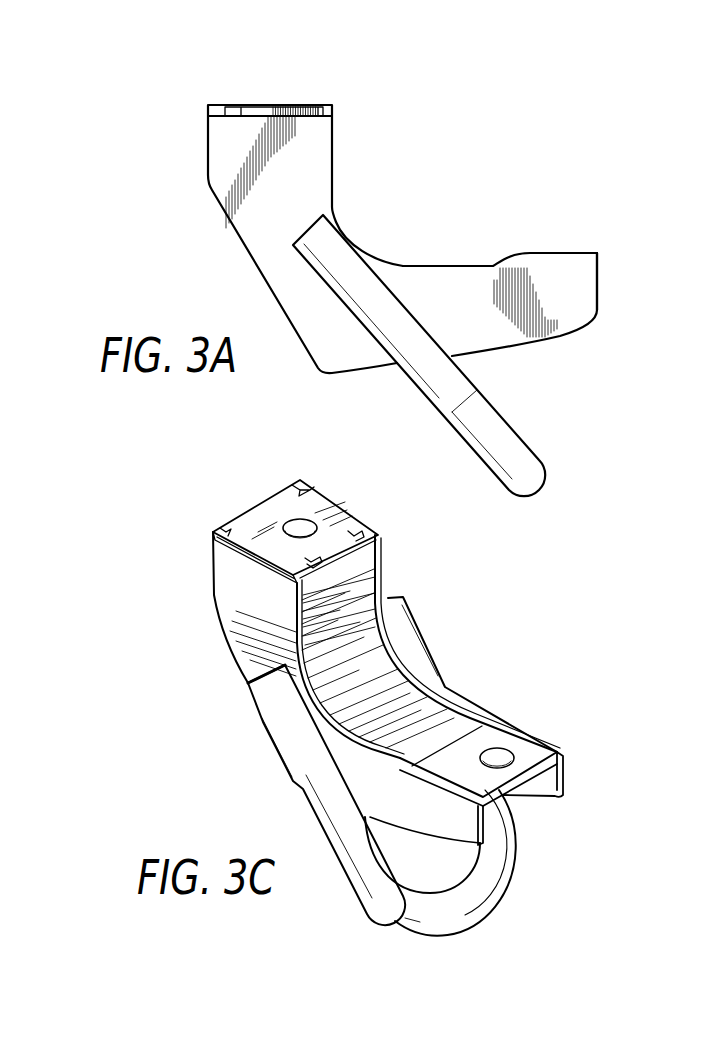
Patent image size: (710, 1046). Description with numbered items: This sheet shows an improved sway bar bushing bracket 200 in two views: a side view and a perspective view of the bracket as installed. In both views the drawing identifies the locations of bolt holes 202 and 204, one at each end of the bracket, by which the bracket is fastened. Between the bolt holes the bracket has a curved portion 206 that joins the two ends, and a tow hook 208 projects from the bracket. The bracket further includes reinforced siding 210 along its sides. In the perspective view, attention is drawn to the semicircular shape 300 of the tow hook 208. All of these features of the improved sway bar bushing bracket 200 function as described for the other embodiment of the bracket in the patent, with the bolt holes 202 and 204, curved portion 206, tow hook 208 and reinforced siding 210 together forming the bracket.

In FIG. 3A, the improved sway bar bushing bracket 200 is at (490, 199).
In FIG. 3C, the improved sway bar bushing bracket 200 is at (491, 634).
In FIG. 3A, the bolt hole 202 is at (265, 104).
In FIG. 3C, the bolt hole 202 is at (292, 518).
In FIG. 3A, the bolt hole 204 is at (561, 252).
In FIG. 3C, the bolt hole 204 is at (505, 750).
In FIG. 3A, the curved portion 206 is at (357, 247).
In FIG. 3C, the curved portion 206 is at (368, 675).
In FIG. 3A, the tow hook 208 is at (442, 383).
In FIG. 3C, the tow hook 208 is at (348, 832).
In FIG. 3A, the reinforced siding 210 is at (240, 152).
In FIG. 3C, the reinforced siding 210 is at (240, 593).
In FIG. 3C, the semicircular shape 300 is at (470, 895).